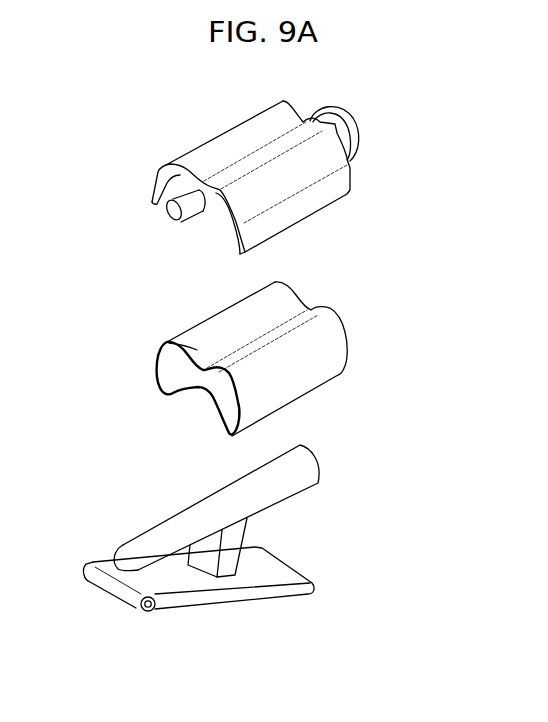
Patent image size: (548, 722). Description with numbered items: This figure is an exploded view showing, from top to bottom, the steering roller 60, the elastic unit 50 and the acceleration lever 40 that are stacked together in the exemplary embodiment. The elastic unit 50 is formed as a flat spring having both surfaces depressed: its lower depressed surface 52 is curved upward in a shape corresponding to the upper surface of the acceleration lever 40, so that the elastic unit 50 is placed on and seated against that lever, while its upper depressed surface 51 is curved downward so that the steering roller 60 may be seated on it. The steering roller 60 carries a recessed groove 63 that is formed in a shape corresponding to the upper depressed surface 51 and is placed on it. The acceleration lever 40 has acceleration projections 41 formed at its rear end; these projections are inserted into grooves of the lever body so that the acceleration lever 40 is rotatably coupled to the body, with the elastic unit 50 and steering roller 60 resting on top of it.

The steering roller 60 is at (233, 141).
The recessed groove 63 is at (217, 230).
The elastic unit 50 is at (264, 381).
The upper depressed surface 51 is at (169, 343).
The lower depressed surface 52 is at (193, 390).
The acceleration lever 40 is at (242, 578).
The acceleration projection 41 is at (150, 611).